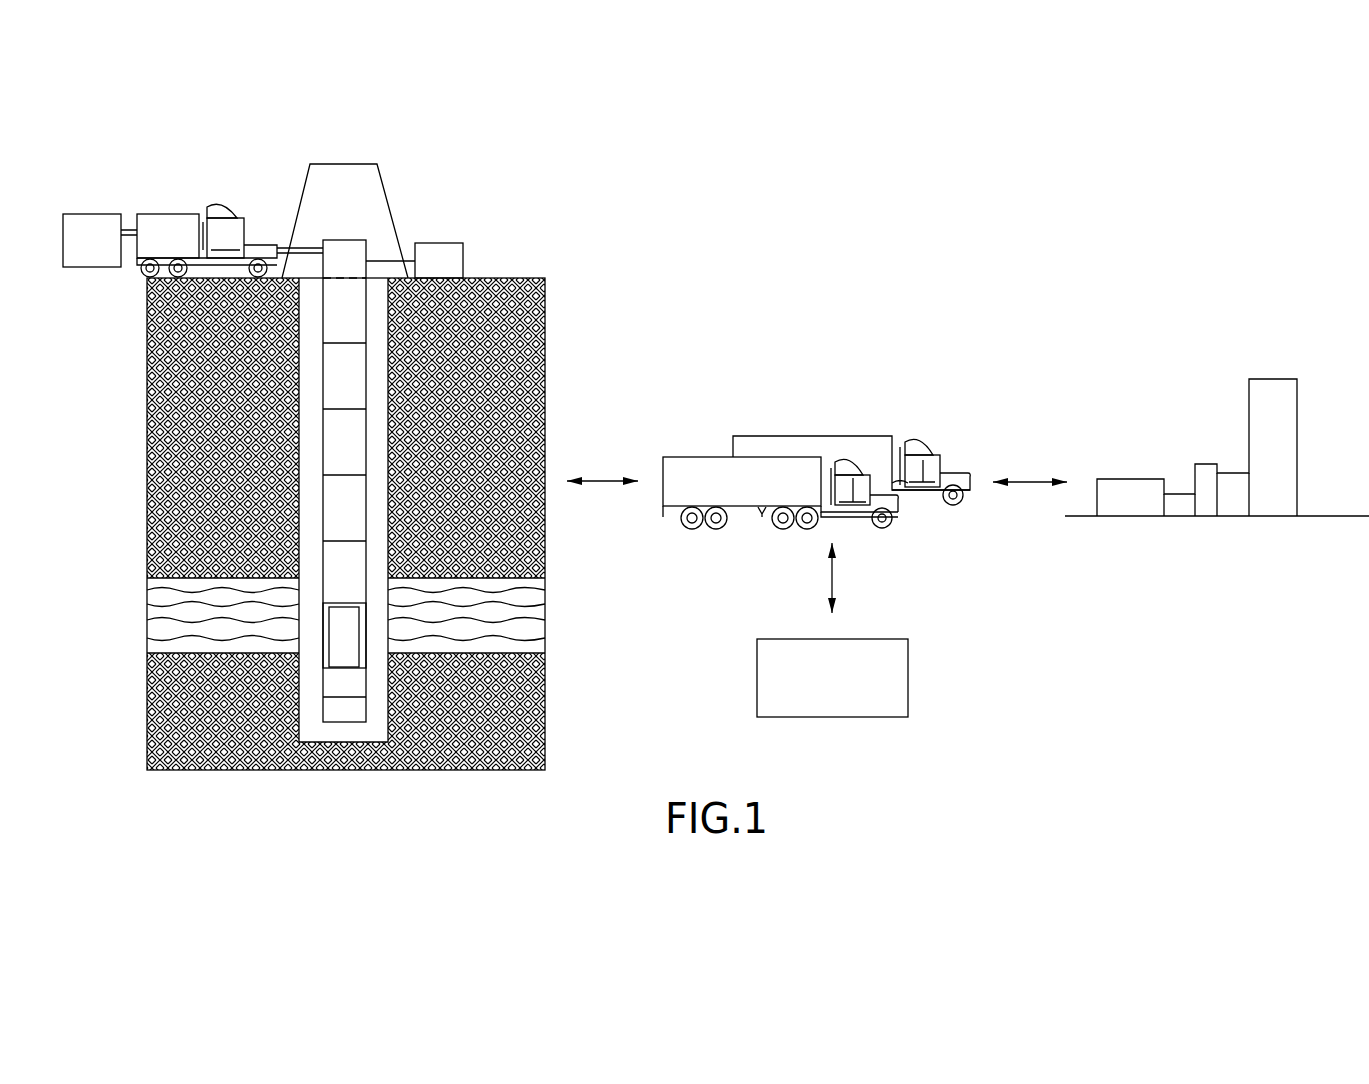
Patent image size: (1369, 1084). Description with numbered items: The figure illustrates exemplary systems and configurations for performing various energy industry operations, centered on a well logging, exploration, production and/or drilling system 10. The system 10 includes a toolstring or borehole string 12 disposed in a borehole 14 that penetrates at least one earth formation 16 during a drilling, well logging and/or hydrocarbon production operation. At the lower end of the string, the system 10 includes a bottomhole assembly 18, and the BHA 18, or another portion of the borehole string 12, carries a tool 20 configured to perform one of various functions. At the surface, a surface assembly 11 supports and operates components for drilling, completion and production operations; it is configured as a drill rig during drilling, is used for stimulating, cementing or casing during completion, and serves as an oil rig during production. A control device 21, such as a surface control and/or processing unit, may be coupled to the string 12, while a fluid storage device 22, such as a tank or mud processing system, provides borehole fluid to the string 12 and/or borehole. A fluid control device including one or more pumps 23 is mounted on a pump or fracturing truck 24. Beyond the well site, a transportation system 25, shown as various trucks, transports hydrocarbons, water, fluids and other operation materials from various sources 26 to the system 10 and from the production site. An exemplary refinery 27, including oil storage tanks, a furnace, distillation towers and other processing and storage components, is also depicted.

The well logging, exploration, production and/or drilling system 10 is at (516, 216).
The surface assembly 11 is at (392, 222).
The borehole string 12 is at (368, 425).
The borehole 14 is at (313, 303).
The earth formation 16 is at (311, 348).
The bottomhole assembly (BHA) 18 is at (366, 664).
The tool 20 is at (327, 657).
The control device 21 is at (452, 273).
The fluid storage device 22 is at (104, 250).
The pumps 23 is at (181, 245).
The pump or fracturing truck 24 is at (238, 252).
The transportation system 25 is at (756, 415).
The sources 26 is at (846, 693).
The refinery 27 is at (1121, 428).